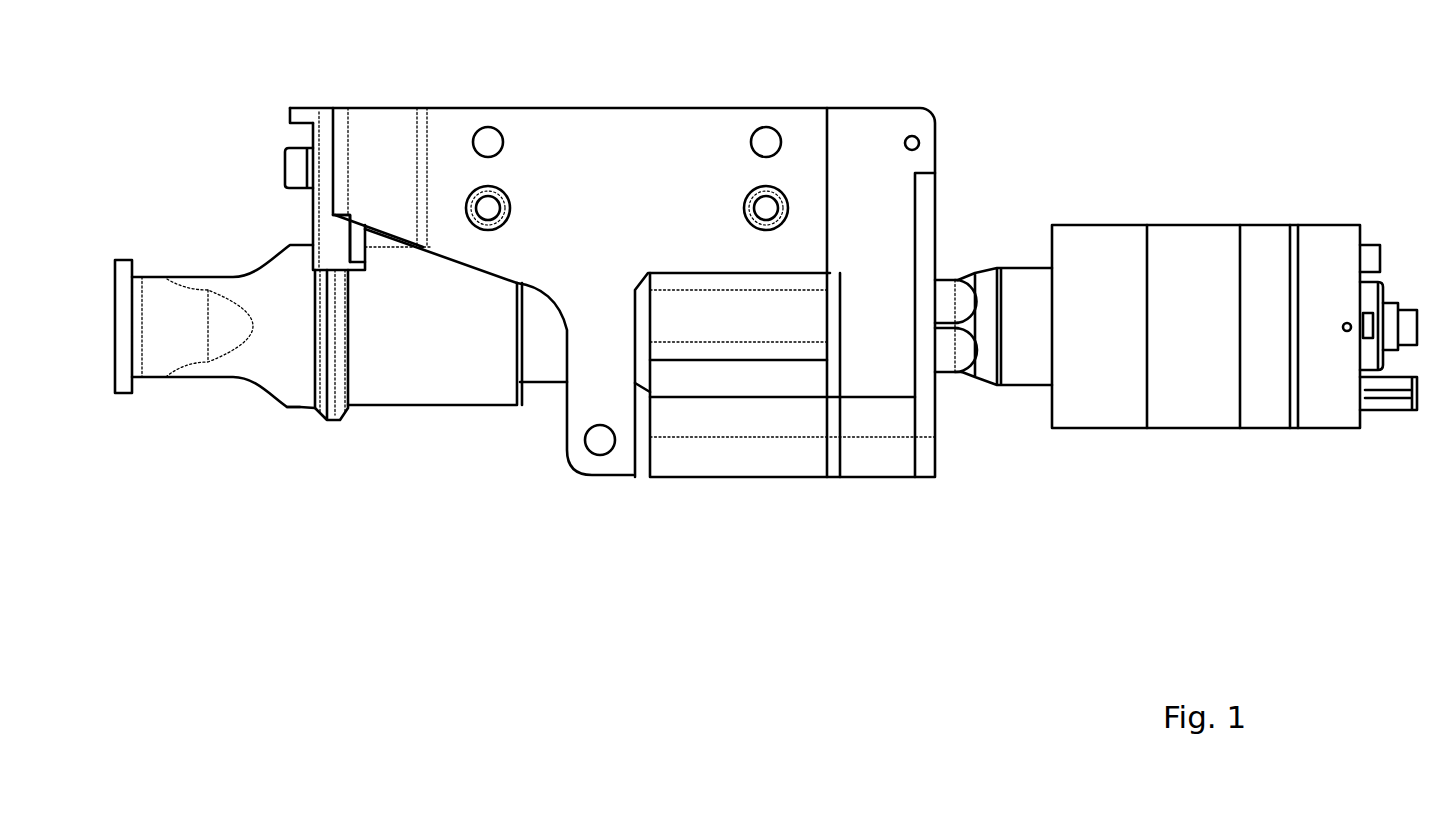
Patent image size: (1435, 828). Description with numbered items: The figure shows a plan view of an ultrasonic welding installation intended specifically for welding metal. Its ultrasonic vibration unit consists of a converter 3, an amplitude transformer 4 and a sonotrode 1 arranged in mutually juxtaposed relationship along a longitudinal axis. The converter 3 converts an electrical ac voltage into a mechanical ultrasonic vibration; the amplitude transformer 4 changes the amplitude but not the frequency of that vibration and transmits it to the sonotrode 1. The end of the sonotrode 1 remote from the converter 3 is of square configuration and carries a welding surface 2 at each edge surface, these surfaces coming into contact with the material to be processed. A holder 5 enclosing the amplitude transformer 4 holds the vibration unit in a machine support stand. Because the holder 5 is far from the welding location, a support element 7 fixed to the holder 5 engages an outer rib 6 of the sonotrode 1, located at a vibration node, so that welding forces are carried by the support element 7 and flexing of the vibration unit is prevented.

The sonotrode 1 is at (438, 377).
The welding surface 2 is at (123, 383).
The converter 3 is at (1125, 275).
The amplitude transformer 4 is at (550, 355).
The holder 5 is at (650, 118).
The outer rib 6 is at (333, 422).
The support element 7 is at (333, 237).